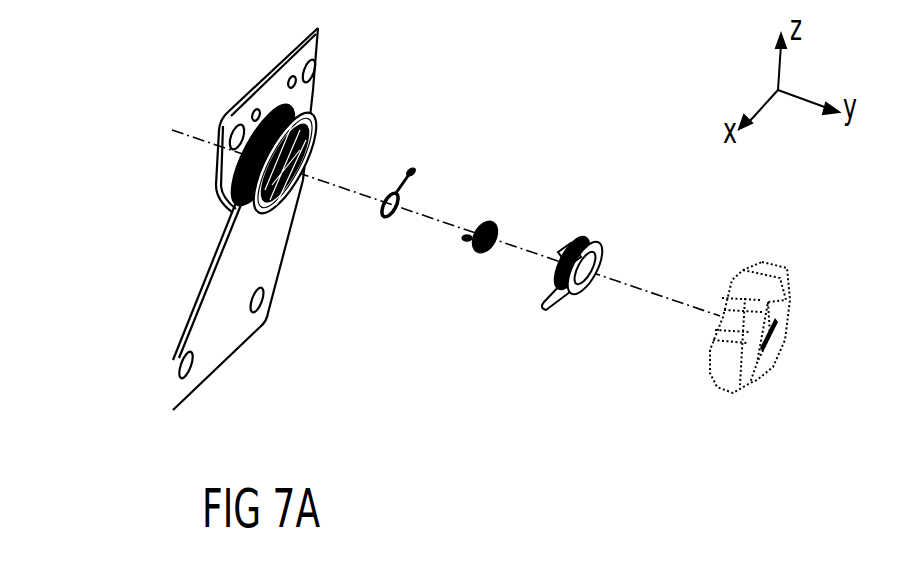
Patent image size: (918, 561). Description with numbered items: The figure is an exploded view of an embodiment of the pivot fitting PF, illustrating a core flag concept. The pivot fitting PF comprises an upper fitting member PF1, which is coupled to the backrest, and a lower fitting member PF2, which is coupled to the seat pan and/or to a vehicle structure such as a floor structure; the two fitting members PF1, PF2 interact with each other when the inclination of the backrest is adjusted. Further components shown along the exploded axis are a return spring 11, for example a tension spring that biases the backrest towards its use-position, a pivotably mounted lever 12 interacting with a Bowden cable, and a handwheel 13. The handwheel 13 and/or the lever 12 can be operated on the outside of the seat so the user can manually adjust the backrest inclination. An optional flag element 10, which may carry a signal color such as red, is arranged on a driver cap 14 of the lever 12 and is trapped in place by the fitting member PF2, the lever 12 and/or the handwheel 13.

The pivot fitting PF is at (154, 124).
The upper fitting member PF1 is at (307, 50).
The lower fitting member PF2 is at (207, 310).
The flag element 10 is at (405, 166).
The return spring 11 is at (475, 262).
The lever 12 is at (581, 292).
The handwheel 13 is at (770, 372).
The driver cap 14 is at (573, 236).